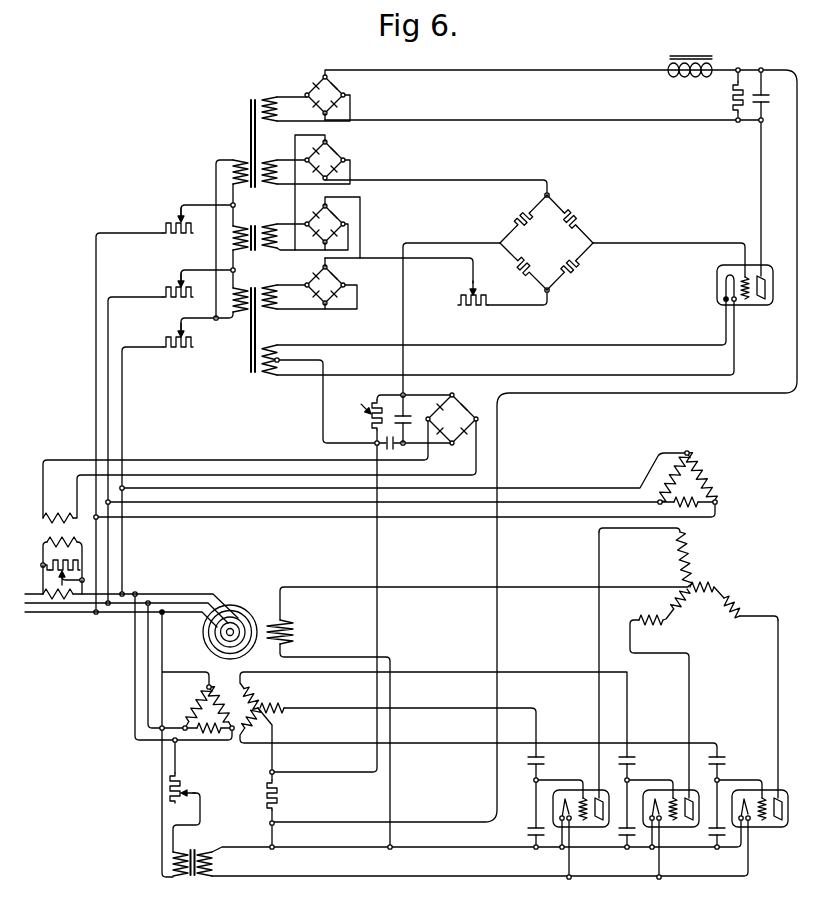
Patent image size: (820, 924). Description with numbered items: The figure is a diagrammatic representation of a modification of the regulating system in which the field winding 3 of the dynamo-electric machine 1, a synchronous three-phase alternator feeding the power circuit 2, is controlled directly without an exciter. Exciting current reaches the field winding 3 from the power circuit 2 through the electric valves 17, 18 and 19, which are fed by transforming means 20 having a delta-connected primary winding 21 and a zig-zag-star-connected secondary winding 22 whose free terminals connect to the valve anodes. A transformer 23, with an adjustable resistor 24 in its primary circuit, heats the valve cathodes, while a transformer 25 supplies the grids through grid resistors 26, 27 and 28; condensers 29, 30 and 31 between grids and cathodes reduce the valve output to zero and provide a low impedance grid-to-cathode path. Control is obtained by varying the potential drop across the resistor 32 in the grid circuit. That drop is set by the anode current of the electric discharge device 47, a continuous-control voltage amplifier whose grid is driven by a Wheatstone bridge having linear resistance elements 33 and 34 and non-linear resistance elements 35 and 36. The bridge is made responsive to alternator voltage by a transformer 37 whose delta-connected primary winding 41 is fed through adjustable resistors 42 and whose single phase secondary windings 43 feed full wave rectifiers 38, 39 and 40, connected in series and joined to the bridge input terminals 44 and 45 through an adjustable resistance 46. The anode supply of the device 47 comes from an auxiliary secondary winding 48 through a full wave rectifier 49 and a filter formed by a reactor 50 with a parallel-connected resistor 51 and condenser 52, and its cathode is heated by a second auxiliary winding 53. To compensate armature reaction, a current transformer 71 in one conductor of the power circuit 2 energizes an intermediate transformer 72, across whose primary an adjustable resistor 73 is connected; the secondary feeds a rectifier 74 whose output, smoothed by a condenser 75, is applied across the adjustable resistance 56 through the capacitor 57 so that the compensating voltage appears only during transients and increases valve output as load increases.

The dynamo-electric machine 1 is at (243, 606).
The power circuit 2 is at (184, 591).
The field winding 3 is at (271, 620).
The electric valve 17 is at (584, 788).
The electric valve 18 is at (674, 788).
The electric valve 19 is at (763, 788).
The transforming means 20 is at (656, 554).
The primary winding 21 is at (712, 478).
The secondary winding 22 is at (701, 583).
The transformer 23 is at (206, 850).
The adjustable resistor 24 is at (182, 786).
The transformer 25 is at (212, 688).
The grid resistor 26 is at (529, 764).
The grid resistor 27 is at (634, 761).
The grid resistor 28 is at (724, 762).
The condenser 29 is at (528, 833).
The condenser 30 is at (620, 834).
The condenser 31 is at (710, 834).
The resistor 32 is at (279, 788).
The resistance element 33 is at (516, 270).
The resistance element 34 is at (577, 216).
The resistance element 35 is at (514, 216).
The resistance element 36 is at (581, 268).
The transformer 37 is at (242, 156).
The rectifier 38 is at (321, 192).
The rectifier 39 is at (332, 227).
The rectifier 40 is at (325, 283).
The primary winding 41 is at (215, 180).
The adjustable resistor 42 is at (173, 284).
The secondary winding 43 is at (267, 222).
The input terminal 44 is at (550, 193).
The input terminal 45 is at (551, 291).
The adjustable resistance 46 is at (468, 308).
The electric discharge device 47 is at (766, 264).
The auxiliary secondary winding 48 is at (270, 96).
The full wave rectifier 49 is at (325, 97).
The reactor 50 is at (690, 78).
The resistor 51 is at (732, 98).
The condenser 52 is at (766, 98).
The auxiliary winding 53 is at (267, 377).
The adjustable resistance 56 is at (366, 421).
The capacitor 57 is at (393, 448).
The current transformer 71 is at (40, 592).
The intermediate transformer 72 is at (40, 523).
The adjustable resistor 73 is at (42, 551).
The rectifier 74 is at (452, 419).
The condenser 75 is at (408, 416).